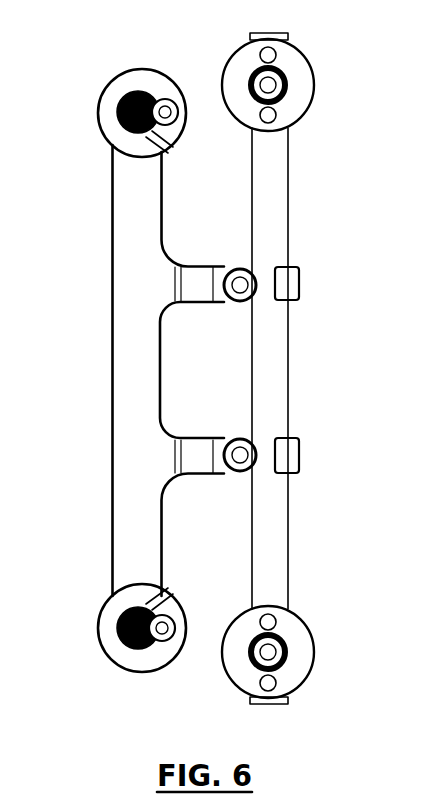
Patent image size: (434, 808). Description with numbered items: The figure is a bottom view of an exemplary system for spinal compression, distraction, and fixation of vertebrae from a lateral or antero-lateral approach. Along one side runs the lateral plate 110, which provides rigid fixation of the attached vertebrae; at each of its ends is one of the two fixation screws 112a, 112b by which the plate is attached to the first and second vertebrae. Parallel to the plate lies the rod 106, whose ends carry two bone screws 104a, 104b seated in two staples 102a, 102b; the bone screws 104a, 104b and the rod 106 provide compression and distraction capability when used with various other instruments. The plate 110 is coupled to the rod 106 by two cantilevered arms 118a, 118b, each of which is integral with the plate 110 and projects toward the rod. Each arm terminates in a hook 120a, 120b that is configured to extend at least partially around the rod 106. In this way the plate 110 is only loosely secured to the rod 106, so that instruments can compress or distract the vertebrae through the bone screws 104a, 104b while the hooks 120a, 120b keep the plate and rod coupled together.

The staple 102a is at (306, 678).
The staple 102b is at (302, 103).
The bone screw 104a is at (277, 642).
The bone screw 104b is at (285, 70).
The rod 106 is at (279, 363).
The lateral plate 110 is at (133, 366).
The fixation screw 112a is at (120, 612).
The fixation screw 112b is at (165, 97).
The cantilevered arm 118a is at (197, 457).
The cantilevered arm 118b is at (197, 280).
The hook 120a is at (297, 453).
The hook 120b is at (293, 281).